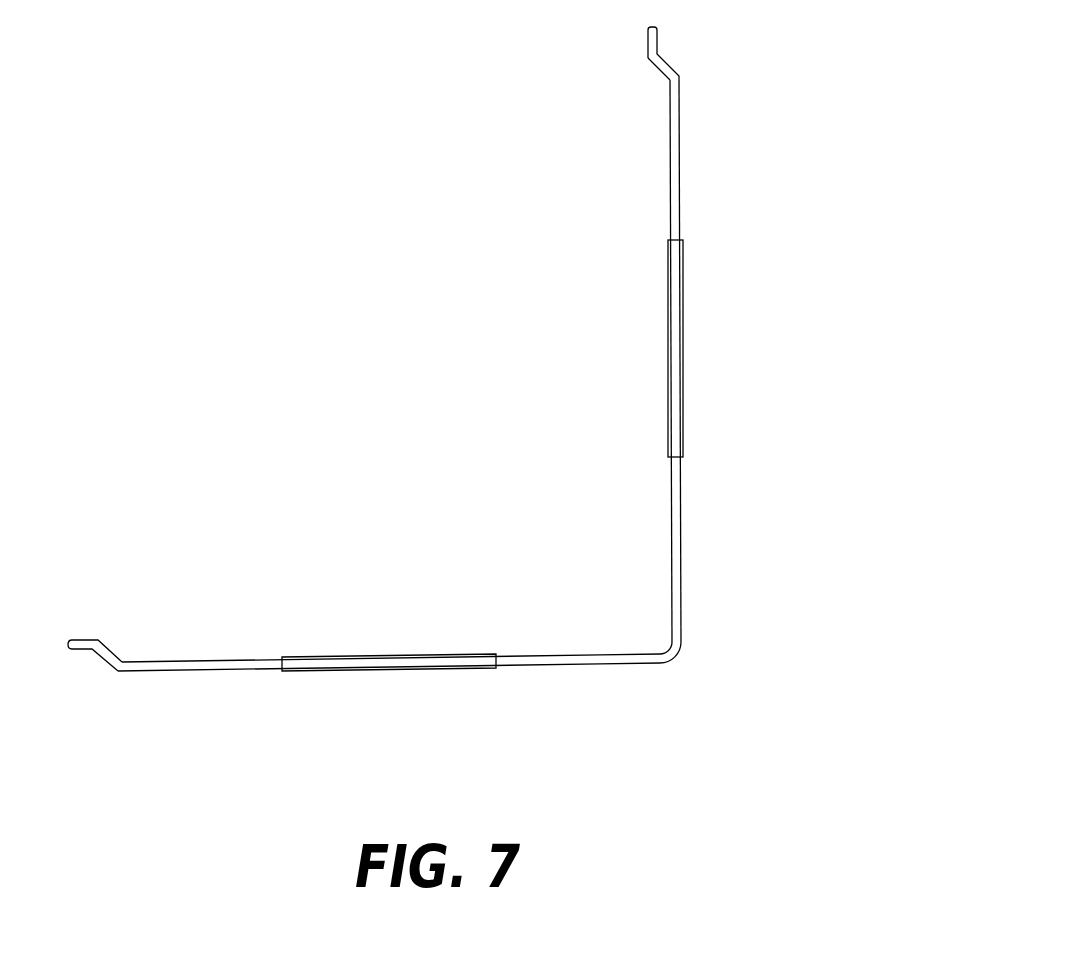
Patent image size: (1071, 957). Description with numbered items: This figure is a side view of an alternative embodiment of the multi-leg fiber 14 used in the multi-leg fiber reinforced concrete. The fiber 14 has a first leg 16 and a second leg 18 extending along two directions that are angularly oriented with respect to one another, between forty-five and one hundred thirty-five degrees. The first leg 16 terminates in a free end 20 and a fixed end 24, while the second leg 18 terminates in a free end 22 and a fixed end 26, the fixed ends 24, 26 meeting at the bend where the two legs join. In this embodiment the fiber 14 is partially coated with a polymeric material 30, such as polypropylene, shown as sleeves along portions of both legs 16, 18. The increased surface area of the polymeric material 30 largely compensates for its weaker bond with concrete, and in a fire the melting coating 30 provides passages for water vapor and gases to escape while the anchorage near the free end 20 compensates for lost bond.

The fiber 14 is at (728, 209).
The first leg 16 is at (172, 662).
The second leg 18 is at (670, 146).
The free end of first leg 20 is at (83, 640).
The free end of second leg 22 is at (657, 44).
The fixed end of first leg 24 is at (640, 664).
The fixed end of second leg 26 is at (681, 615).
The polymeric material 30 is at (683, 350).